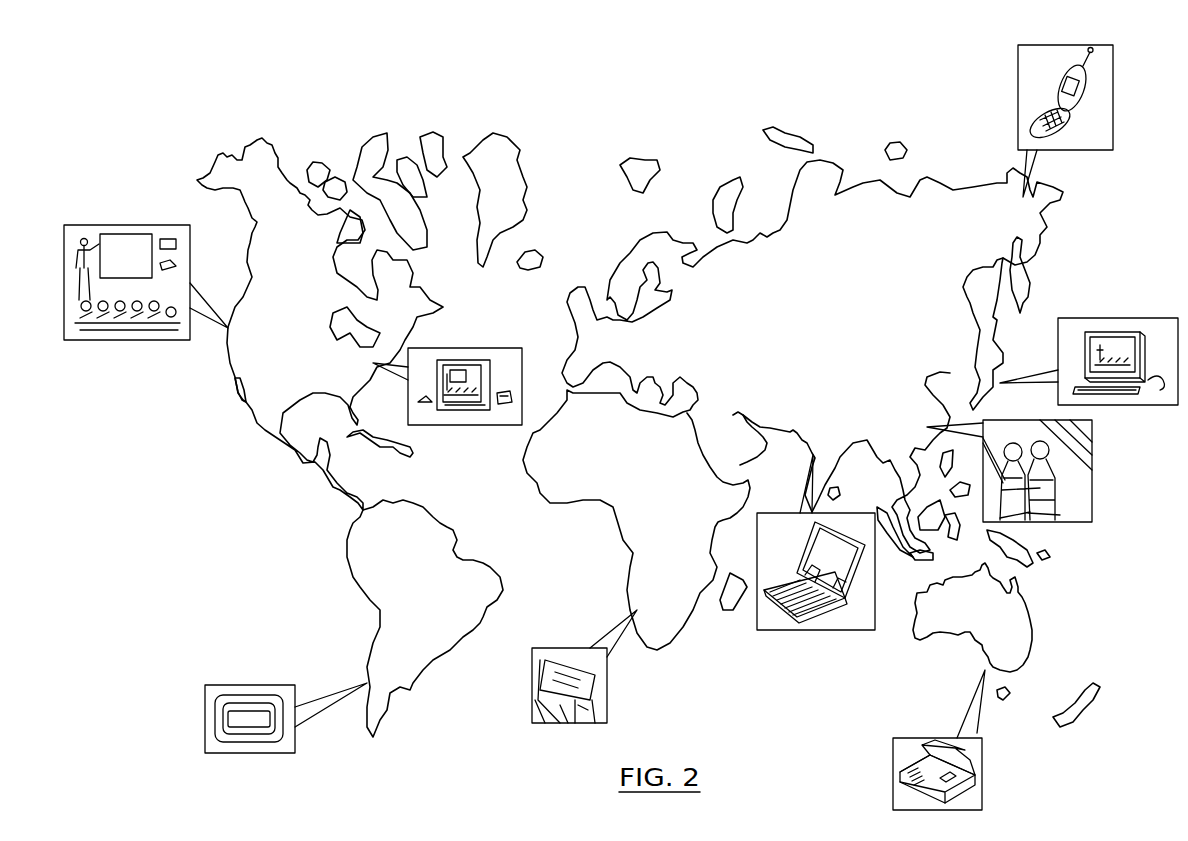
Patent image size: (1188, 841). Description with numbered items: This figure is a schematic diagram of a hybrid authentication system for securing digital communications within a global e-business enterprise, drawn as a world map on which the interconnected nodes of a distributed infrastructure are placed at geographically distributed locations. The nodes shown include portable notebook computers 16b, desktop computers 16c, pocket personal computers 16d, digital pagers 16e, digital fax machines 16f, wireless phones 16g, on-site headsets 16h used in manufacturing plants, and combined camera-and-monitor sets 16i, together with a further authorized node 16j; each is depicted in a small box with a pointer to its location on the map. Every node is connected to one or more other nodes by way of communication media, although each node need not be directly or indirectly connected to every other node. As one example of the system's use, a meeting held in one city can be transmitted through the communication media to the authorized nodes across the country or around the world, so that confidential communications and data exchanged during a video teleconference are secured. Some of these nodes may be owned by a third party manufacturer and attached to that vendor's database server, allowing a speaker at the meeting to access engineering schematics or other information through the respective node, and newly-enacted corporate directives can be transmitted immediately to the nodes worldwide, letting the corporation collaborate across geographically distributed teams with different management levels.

The portable notebook computers 16b is at (790, 630).
The desktop computers 16c is at (1135, 318).
The pocket personal computers 16d is at (563, 648).
The digital pagers 16e is at (262, 683).
The digital fax machines 16f is at (982, 750).
The wireless phones 16g is at (1018, 97).
The on-site headsets 16h is at (1093, 497).
The combined camera-and-monitor sets 16i is at (504, 348).
The node 16j is at (113, 225).